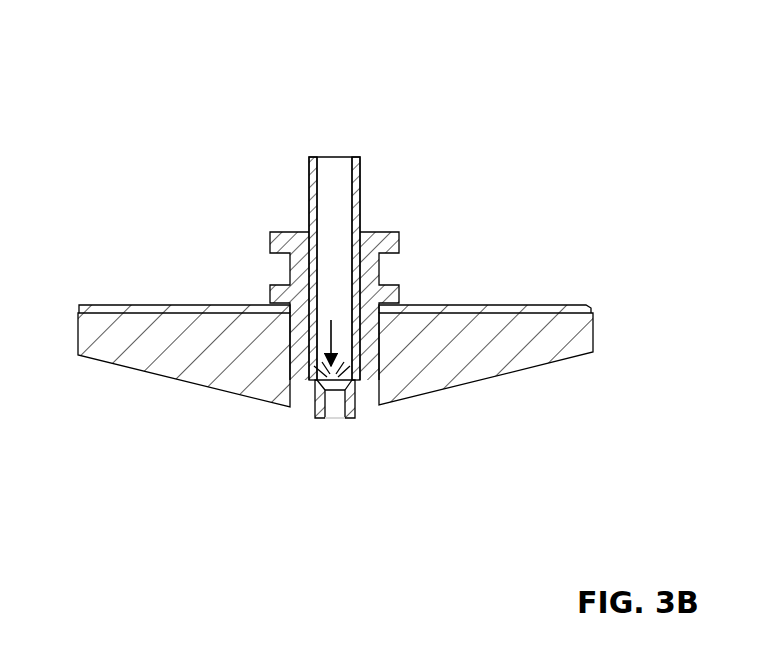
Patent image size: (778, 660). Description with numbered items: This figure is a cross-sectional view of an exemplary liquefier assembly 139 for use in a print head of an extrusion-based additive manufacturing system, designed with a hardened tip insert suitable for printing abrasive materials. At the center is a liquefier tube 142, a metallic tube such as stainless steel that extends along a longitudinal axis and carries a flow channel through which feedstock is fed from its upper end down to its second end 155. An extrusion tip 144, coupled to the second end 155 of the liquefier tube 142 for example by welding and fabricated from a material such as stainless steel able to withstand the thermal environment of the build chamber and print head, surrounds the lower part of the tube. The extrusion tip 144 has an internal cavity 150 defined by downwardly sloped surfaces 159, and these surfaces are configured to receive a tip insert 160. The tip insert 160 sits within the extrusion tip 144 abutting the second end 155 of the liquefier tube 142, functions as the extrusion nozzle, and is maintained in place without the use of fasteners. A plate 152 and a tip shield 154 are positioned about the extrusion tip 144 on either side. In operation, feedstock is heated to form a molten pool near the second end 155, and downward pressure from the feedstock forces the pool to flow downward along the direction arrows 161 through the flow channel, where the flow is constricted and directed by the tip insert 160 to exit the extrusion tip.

The liquefier assembly 139 is at (183, 83).
The liquefier tube 142 is at (361, 172).
The extrusion tip 144 is at (270, 232).
The internal cavity 150 is at (360, 387).
The plate 152 is at (566, 304).
The tip shield 154 is at (594, 338).
The second end 155 is at (309, 220).
The downwardly sloped surfaces 159 is at (318, 392).
The tip insert 160 is at (322, 427).
The direction arrows 161 is at (336, 318).